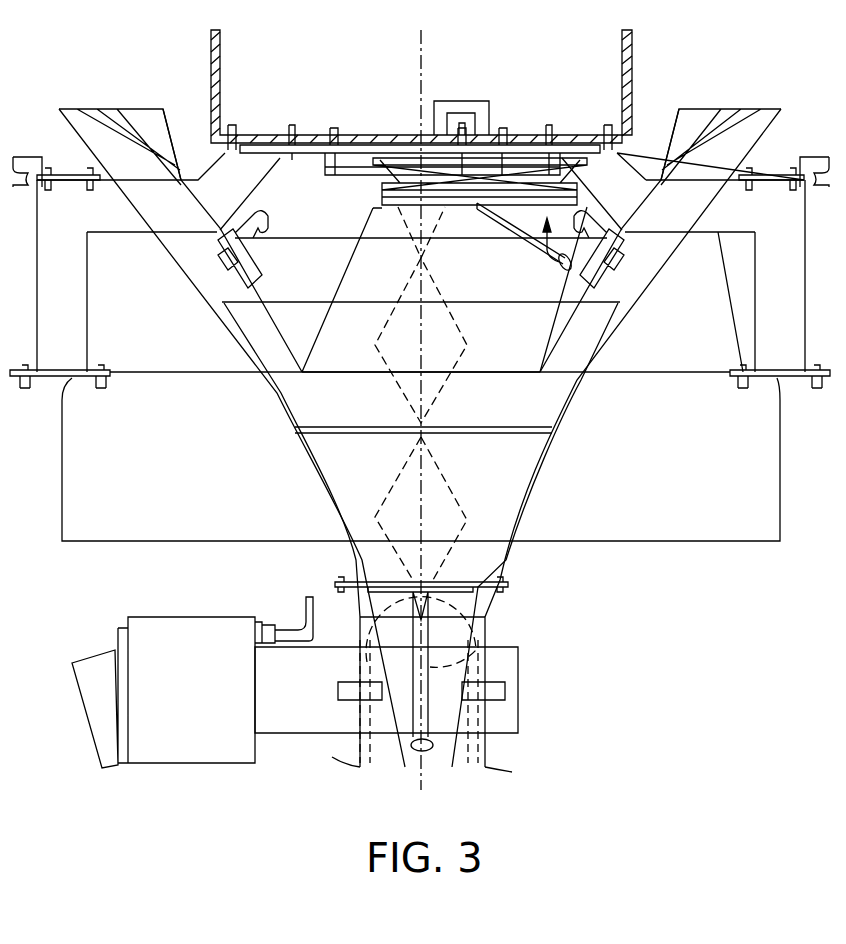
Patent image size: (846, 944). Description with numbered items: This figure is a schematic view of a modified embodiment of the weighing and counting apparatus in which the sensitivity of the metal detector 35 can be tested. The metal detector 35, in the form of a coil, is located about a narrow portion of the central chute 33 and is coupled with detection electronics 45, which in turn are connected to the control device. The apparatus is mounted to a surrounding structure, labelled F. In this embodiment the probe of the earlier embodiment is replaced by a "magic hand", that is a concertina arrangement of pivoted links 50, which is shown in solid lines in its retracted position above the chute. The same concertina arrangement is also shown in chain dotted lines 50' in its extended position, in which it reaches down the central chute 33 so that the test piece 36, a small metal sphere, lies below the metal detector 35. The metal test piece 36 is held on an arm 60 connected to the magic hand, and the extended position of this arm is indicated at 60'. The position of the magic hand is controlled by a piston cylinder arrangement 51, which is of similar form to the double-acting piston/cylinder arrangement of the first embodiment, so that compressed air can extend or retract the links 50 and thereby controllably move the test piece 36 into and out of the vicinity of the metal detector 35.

The floor / mounting frame plate F is at (632, 70).
The piston cylinder arrangement 51 is at (340, 178).
The pivoted links 50 is at (520, 257).
The central chute 33 is at (515, 497).
The test piece 36 is at (557, 262).
The arm 60 is at (525, 251).
The pivoted links in extended position 50' is at (441, 393).
The lower sensor 60' is at (451, 680).
The metal detector 35 is at (518, 712).
The detection electronics 45 is at (148, 617).